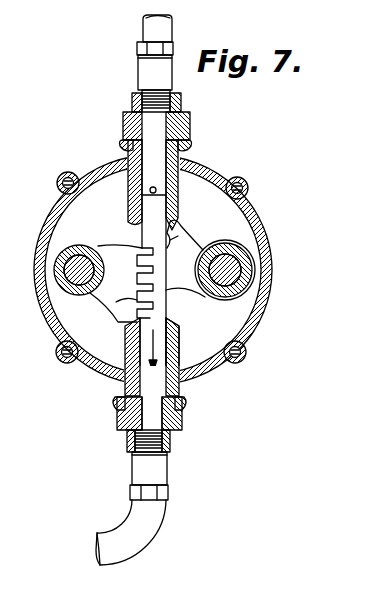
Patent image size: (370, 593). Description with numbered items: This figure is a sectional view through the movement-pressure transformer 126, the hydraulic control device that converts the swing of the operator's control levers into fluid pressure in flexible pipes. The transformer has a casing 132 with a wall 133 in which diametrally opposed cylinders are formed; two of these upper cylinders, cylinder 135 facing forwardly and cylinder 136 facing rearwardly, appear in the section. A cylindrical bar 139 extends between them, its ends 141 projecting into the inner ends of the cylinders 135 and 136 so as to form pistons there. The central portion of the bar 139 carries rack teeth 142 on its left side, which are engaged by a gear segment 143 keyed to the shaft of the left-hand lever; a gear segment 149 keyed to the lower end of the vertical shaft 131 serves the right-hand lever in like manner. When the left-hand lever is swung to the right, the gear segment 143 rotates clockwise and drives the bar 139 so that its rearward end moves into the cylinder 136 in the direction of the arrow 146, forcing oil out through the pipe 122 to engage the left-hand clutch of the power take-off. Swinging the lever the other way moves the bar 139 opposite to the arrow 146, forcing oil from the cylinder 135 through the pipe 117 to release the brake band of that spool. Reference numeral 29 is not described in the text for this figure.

The shaft 29 is at (68, 272).
The pipe 117 is at (147, 24).
The pipe 122 is at (127, 540).
The movement-pressure transformer 126 is at (157, 264).
The vertical shaft 131 is at (240, 262).
The casing 132 is at (256, 199).
The wall 133 is at (57, 338).
The cylinder 135 is at (184, 168).
The cylinder 136 is at (178, 358).
The cylindrical bar 139 is at (157, 332).
The ends of the bar 141 is at (157, 210).
The rack teeth 142 is at (147, 330).
The gear segment 143 is at (120, 250).
The arrow 146 is at (143, 352).
The gear segment 149 is at (192, 242).